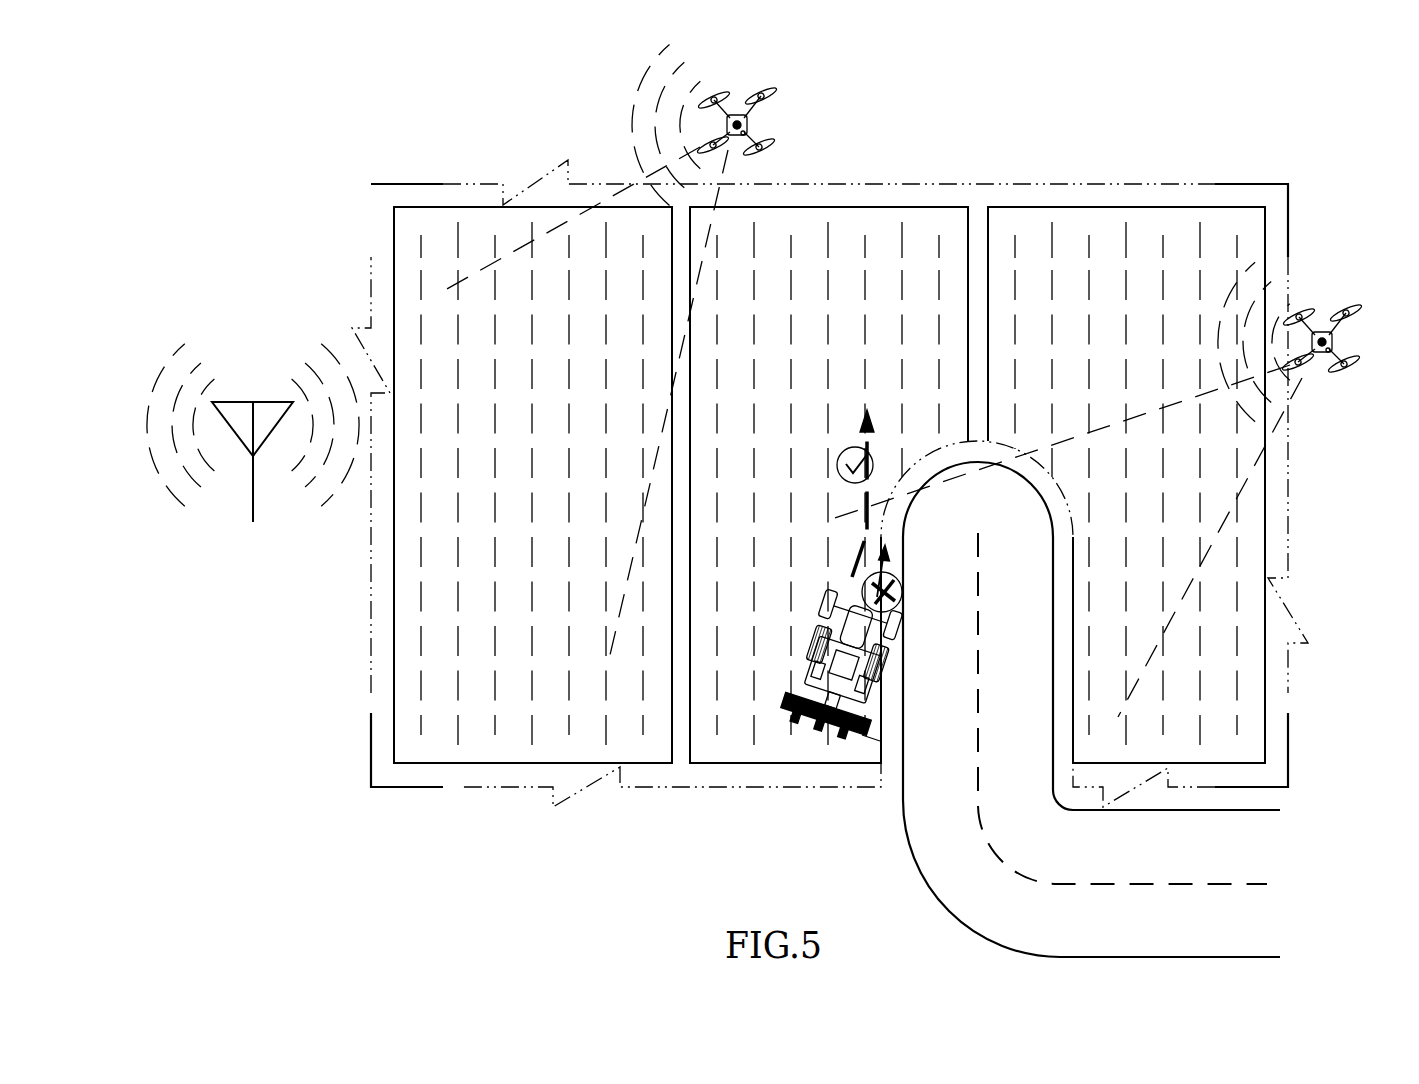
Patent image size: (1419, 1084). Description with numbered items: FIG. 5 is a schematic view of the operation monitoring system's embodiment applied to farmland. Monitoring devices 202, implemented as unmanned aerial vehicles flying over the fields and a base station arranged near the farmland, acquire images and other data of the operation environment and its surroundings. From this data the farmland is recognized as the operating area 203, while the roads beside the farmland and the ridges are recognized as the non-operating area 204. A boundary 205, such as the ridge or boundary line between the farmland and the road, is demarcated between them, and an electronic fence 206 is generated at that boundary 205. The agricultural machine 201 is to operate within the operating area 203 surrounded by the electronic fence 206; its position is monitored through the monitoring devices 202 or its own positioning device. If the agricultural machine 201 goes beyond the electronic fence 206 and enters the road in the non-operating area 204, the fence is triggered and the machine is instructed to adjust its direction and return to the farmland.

The agricultural machine 201 is at (842, 655).
The monitoring device 202 is at (237, 418).
The operating area 203 is at (430, 325).
The non-operating area 204 is at (679, 710).
The boundary 205 is at (724, 781).
The electronic fence 206 is at (805, 788).